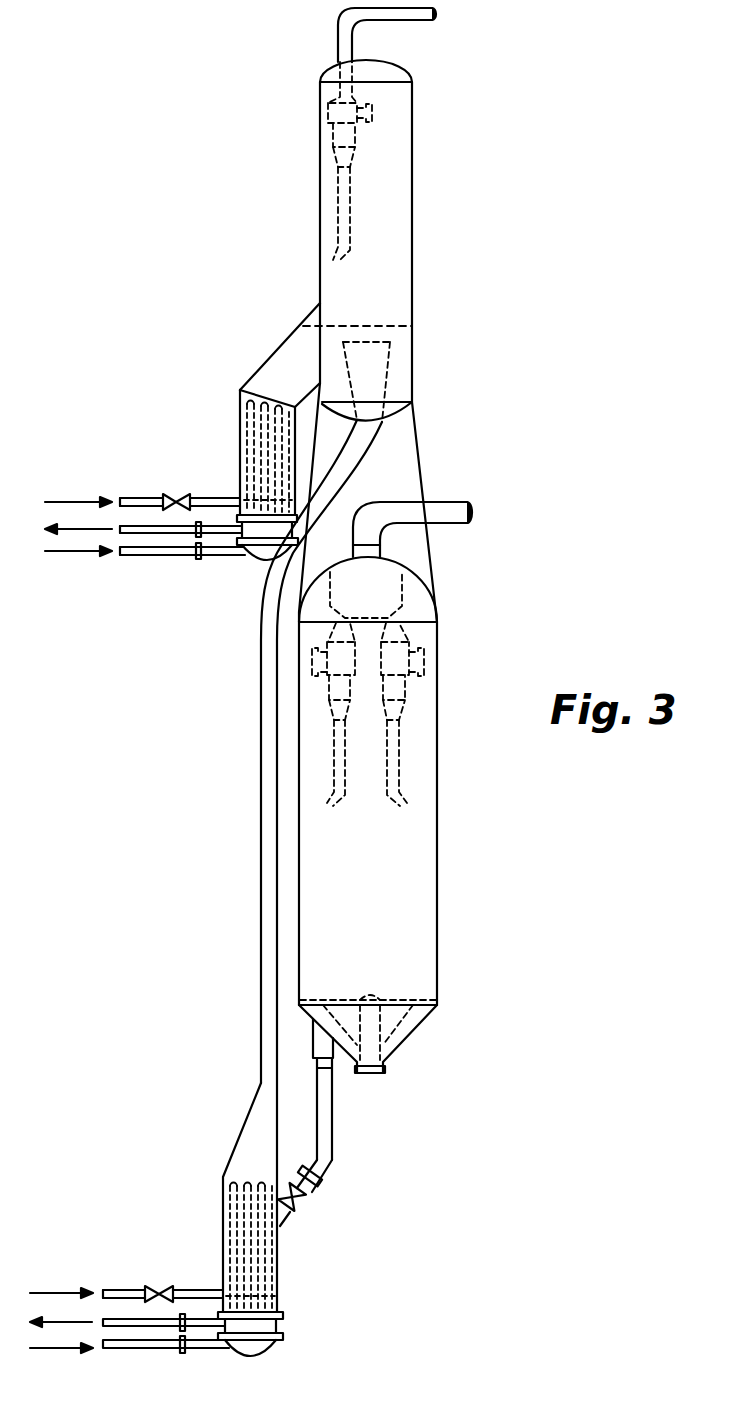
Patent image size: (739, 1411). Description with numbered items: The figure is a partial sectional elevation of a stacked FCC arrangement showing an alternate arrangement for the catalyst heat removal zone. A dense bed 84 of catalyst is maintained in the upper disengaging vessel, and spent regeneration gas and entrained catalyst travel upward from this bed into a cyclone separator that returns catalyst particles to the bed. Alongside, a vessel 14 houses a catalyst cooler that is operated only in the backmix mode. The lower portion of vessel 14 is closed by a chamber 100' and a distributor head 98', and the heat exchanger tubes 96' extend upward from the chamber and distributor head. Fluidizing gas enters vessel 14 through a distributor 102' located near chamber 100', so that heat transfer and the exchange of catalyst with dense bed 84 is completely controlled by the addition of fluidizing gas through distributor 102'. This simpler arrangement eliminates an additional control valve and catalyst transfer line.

The dense bed 84 is at (334, 362).
The vessel 14 is at (243, 451).
The heat exchanger tubes 96' is at (235, 437).
The distributor 102' is at (180, 483).
The chamber 100' is at (209, 560).
The distributor head 98' is at (206, 589).